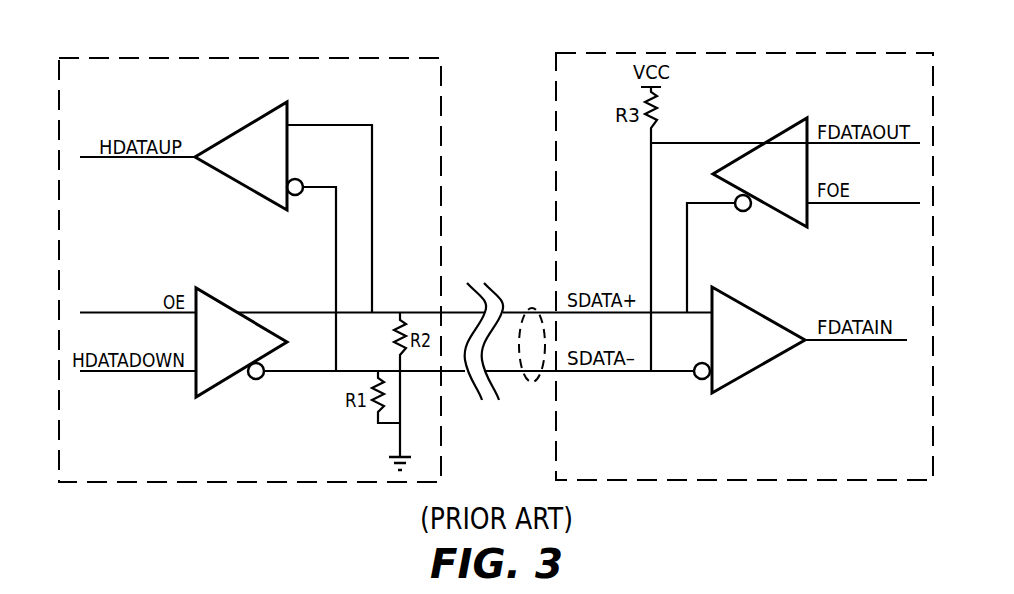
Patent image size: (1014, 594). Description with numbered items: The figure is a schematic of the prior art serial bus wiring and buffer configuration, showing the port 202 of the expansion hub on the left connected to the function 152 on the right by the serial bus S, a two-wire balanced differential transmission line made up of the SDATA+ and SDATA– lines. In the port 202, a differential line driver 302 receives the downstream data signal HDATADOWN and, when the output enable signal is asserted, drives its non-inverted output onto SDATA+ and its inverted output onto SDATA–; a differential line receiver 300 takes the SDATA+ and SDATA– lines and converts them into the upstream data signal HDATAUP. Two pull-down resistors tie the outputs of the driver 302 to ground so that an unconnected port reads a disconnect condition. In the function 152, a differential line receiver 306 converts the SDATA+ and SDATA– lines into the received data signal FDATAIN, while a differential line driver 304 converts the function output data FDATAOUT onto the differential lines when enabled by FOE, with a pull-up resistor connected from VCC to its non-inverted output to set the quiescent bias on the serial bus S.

The port 202 is at (276, 56).
The function 152 is at (770, 52).
The differential line receiver 300 is at (247, 125).
The differential line driver 302 is at (220, 386).
The differential line driver 304 is at (793, 127).
The differential line receiver 306 is at (751, 303).
The serial bus S is at (530, 305).